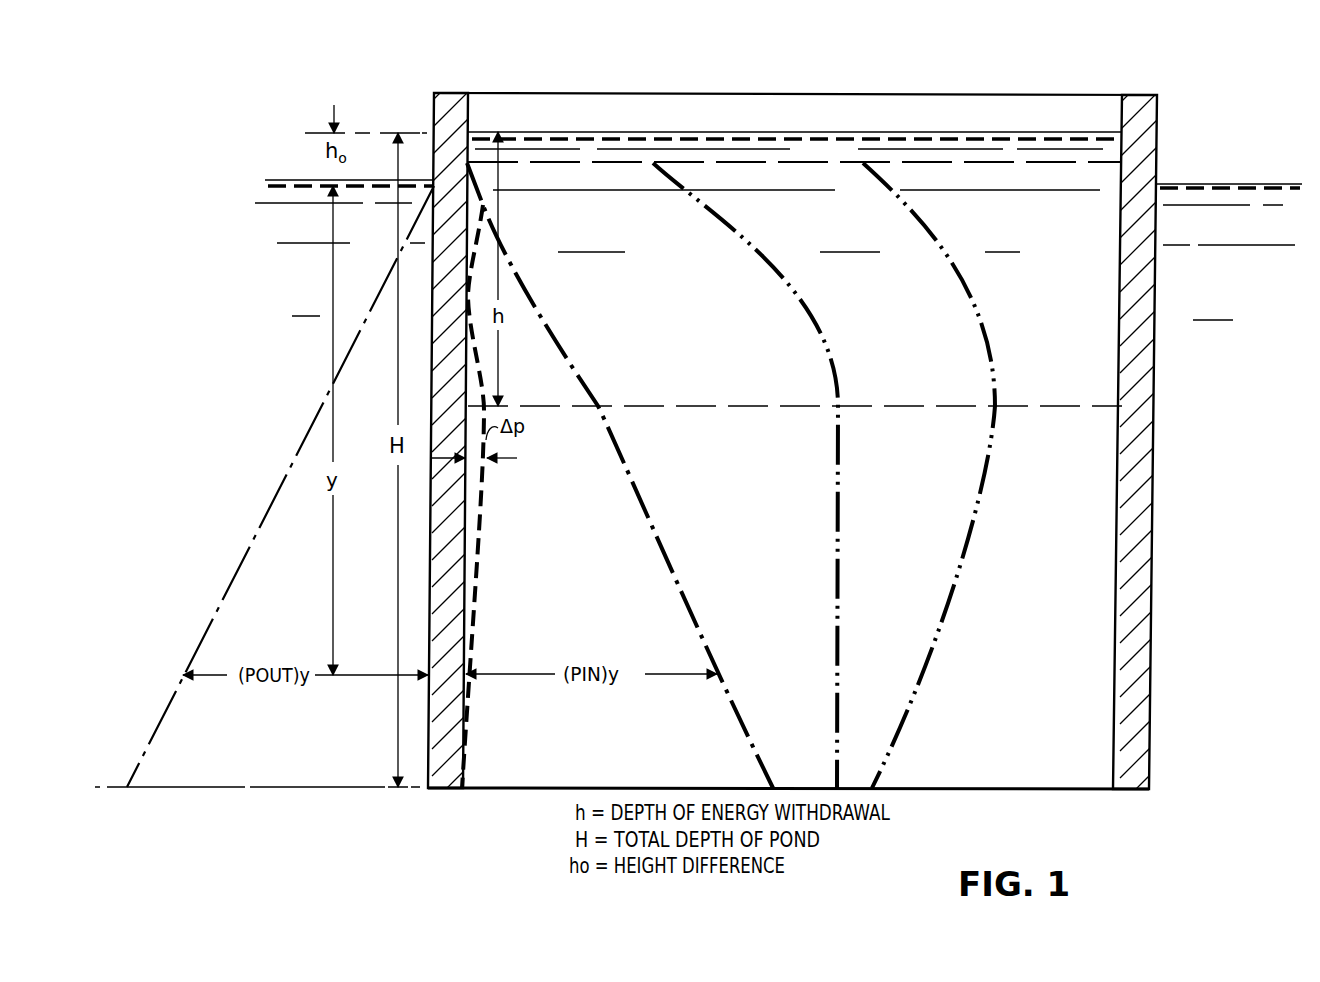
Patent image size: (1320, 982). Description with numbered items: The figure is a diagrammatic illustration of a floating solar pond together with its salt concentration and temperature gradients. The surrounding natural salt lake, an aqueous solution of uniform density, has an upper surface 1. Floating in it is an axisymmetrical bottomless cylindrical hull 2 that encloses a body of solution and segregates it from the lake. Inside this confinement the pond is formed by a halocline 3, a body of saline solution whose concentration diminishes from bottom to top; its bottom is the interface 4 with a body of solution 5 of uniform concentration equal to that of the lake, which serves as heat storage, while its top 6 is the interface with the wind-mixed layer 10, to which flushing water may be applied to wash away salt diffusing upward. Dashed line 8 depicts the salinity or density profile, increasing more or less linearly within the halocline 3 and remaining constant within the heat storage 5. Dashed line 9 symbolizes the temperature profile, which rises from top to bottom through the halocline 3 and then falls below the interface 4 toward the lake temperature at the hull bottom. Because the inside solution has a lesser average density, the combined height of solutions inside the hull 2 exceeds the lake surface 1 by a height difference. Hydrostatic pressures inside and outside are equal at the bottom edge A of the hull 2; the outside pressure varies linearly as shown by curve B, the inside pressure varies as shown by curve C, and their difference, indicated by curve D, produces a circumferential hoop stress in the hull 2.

The surface of reservoir 1 is at (1228, 184).
The bottomless cylindrical hull 2 is at (1153, 410).
The halocline 3 is at (1085, 308).
The interface 4 is at (1030, 406).
The body of solution 5 is at (1085, 579).
The top 6 is at (1050, 165).
The dashed line 8 is at (712, 214).
The dashed line 9 is at (920, 214).
The wind-mixed layer 10 is at (1050, 148).
The bottom edge A is at (437, 790).
The curve B is at (255, 526).
The curve C is at (666, 558).
The curve D is at (480, 530).